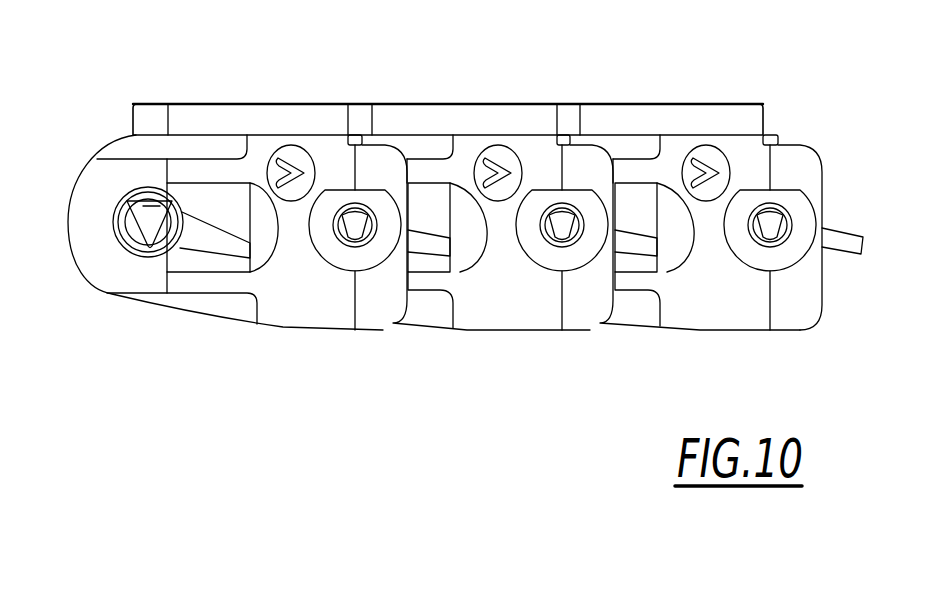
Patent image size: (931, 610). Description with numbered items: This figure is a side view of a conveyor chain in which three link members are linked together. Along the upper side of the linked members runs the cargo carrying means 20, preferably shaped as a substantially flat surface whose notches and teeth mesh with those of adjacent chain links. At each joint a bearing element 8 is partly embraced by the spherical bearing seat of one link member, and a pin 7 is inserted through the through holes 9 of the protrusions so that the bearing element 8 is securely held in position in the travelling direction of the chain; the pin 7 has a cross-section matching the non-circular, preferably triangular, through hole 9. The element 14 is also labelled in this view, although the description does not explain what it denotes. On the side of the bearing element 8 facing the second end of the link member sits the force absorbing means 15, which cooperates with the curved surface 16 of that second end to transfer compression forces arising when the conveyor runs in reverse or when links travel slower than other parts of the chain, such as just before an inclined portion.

The pin 7 is at (146, 232).
The bearing element 8 is at (150, 188).
The first through hole 9 is at (388, 236).
The module body 14 is at (474, 141).
The force absorbing means 15 is at (207, 258).
The curved surface 16 is at (252, 222).
The cargo carrying means 20 is at (678, 112).